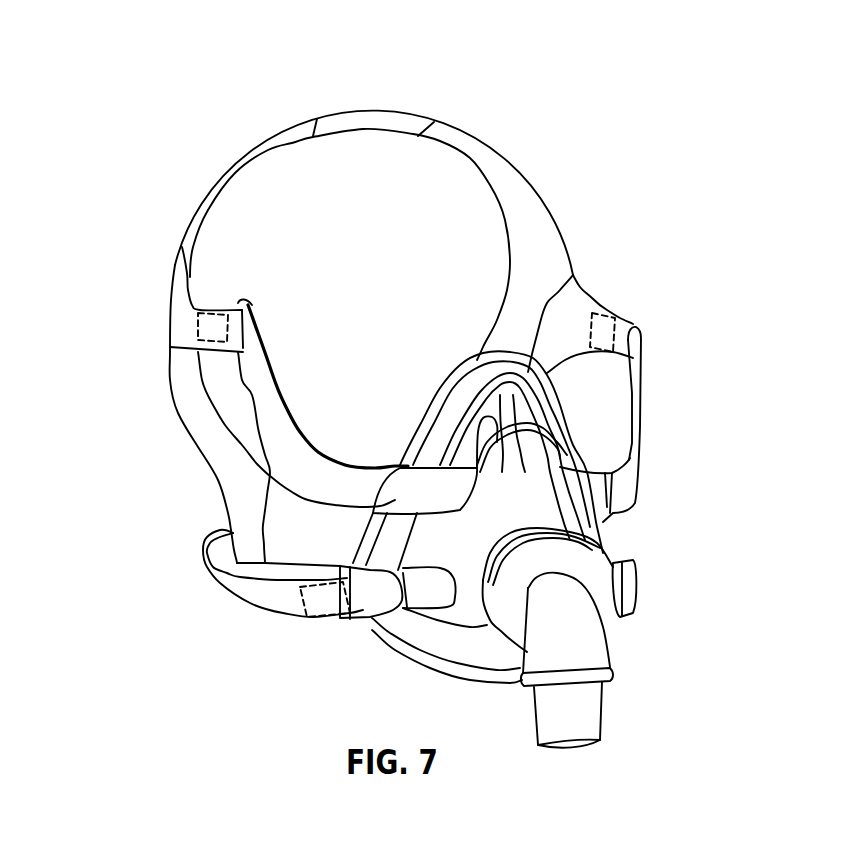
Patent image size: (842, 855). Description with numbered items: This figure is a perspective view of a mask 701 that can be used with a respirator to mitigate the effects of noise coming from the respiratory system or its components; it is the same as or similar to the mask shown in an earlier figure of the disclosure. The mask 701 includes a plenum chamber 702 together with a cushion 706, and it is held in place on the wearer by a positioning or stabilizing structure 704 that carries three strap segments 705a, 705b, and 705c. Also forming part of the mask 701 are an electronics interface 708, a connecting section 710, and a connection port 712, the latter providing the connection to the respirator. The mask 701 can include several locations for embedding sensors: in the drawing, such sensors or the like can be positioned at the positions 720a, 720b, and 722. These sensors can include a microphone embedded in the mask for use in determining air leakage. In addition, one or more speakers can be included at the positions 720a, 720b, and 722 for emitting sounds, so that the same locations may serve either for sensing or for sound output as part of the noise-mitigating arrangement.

The mask 701 is at (454, 398).
The plenum chamber 702 is at (545, 451).
The positioning or stabilizing structure 704 is at (460, 124).
The strap segment 705a is at (335, 618).
The strap segment 705b is at (284, 391).
The strap segment 705c is at (632, 468).
The cushion 706 is at (462, 332).
The electronics interface 708 is at (657, 581).
The connecting section 710 is at (580, 529).
The connection port 712 is at (610, 702).
The sensor position 720a is at (190, 317).
The sensor position 720b is at (627, 320).
The sensor position 722 is at (325, 624).